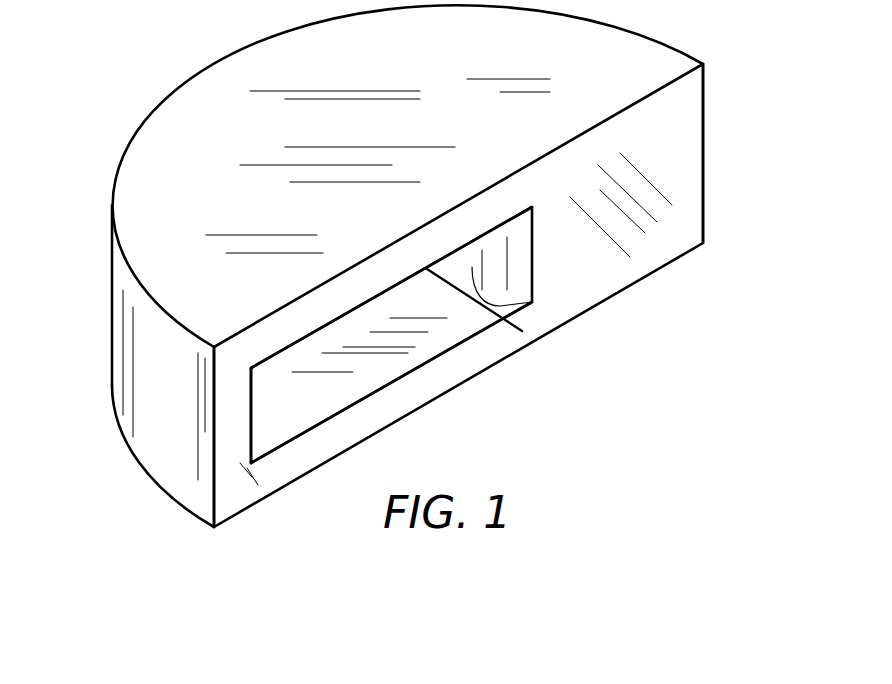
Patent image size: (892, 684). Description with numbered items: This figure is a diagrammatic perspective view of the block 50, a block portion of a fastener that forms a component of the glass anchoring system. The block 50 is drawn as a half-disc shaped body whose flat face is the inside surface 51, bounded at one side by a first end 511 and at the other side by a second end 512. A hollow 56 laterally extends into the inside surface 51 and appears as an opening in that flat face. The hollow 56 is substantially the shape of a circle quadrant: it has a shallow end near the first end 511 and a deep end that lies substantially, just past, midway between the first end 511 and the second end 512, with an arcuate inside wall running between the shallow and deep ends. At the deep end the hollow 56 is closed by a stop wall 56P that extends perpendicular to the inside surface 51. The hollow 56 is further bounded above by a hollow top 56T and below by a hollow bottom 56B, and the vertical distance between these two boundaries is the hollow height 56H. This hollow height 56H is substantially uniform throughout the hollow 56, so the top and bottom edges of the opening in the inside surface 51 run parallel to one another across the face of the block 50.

The block 50 is at (175, 502).
The inside surface 51 is at (585, 285).
The first end 511 is at (213, 430).
The second end 512 is at (704, 138).
The hollow 56 is at (343, 409).
The hollow top 56T is at (347, 314).
The hollow bottom 56B is at (427, 362).
The hollow height 56H is at (250, 391).
The stop wall 56P is at (522, 331).